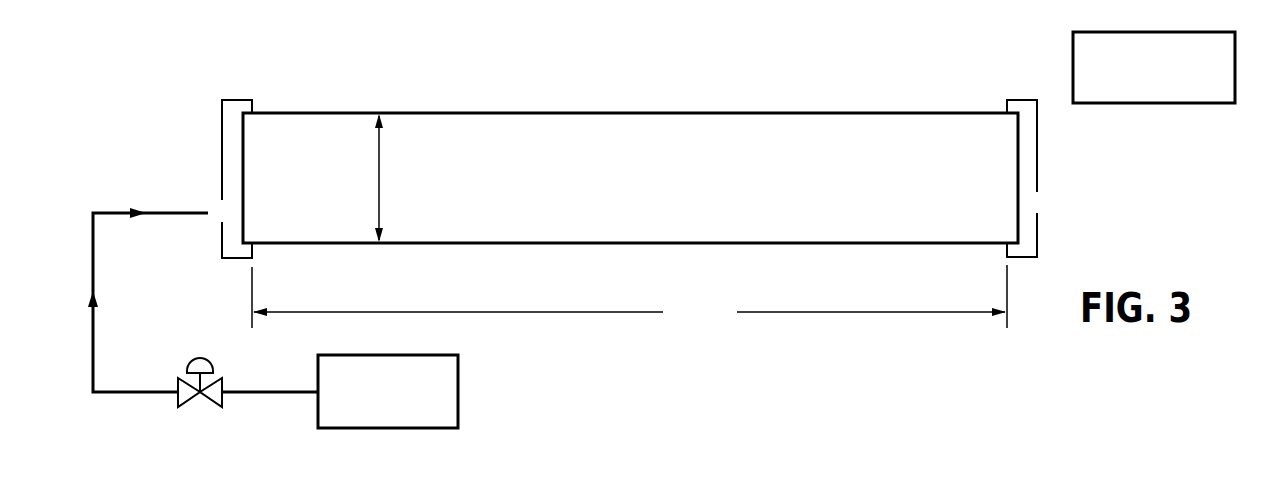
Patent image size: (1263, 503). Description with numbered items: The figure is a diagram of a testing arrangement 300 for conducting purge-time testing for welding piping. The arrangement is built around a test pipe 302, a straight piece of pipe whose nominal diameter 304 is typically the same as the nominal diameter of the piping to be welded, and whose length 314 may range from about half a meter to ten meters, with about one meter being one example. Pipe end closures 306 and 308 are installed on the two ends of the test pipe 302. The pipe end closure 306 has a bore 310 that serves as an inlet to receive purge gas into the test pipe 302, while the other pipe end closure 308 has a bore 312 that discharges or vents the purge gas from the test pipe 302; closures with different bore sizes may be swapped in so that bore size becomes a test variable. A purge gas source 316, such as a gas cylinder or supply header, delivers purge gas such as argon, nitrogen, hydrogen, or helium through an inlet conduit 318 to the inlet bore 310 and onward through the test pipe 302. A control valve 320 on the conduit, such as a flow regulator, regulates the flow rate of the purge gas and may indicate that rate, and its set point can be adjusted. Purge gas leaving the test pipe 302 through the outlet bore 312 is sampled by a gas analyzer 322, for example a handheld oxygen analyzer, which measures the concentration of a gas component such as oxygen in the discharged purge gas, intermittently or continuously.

The testing arrangement 300 is at (182, 119).
The test pipe 302 is at (620, 140).
The nominal diameter 304 is at (376, 178).
The pipe end closure 306 is at (238, 101).
The pipe end closure 308 is at (1030, 100).
The bore 310 is at (220, 215).
The bore 312 is at (1035, 200).
The length 314 is at (629, 296).
The purge gas source 316 is at (458, 396).
The inlet conduit 318 is at (127, 393).
The control valve 320 is at (203, 357).
The gas analyzer 322 is at (1163, 103).